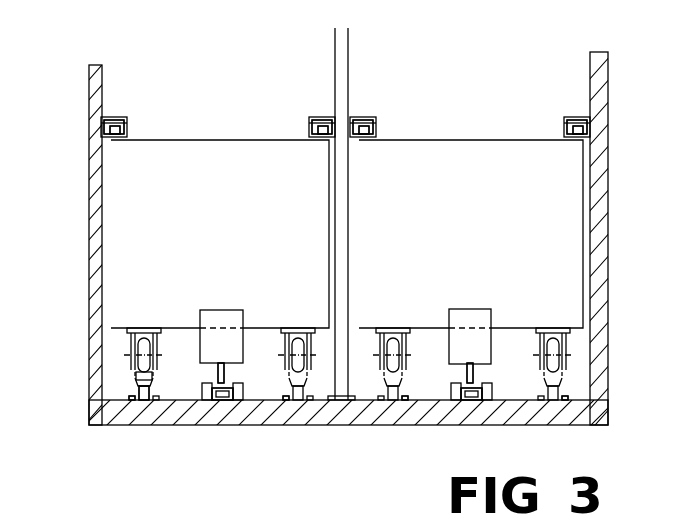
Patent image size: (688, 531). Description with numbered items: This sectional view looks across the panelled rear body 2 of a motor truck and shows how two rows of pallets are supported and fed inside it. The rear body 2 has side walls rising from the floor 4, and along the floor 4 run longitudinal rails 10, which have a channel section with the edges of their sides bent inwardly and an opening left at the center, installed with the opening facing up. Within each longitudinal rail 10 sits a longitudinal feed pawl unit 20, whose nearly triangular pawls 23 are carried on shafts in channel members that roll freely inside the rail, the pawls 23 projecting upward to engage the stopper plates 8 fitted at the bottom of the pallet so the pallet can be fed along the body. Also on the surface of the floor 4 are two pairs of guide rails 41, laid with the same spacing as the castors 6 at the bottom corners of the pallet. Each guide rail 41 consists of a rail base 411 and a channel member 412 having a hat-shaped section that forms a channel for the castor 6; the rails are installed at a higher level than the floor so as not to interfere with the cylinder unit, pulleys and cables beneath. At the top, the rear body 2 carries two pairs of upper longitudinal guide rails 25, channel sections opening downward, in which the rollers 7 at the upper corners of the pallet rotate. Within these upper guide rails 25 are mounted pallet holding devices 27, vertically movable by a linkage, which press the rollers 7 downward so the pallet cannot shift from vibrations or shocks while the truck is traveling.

The panelled rear body 2 is at (89, 222).
The floor 4 is at (492, 415).
The castors 6 is at (144, 340).
The rollers 7 is at (114, 135).
The stopper plates 8 is at (222, 318).
The longitudinal rail 10 is at (204, 398).
The longitudinal feed pawl unit 20 is at (226, 388).
The pawls 23 is at (220, 372).
The upper longitudinal guide rails 25 is at (113, 118).
The pallet holding devices 27 is at (127, 123).
The guide rails 41 is at (137, 390).
The rail base 411 is at (131, 397).
The channel member 412 is at (134, 378).